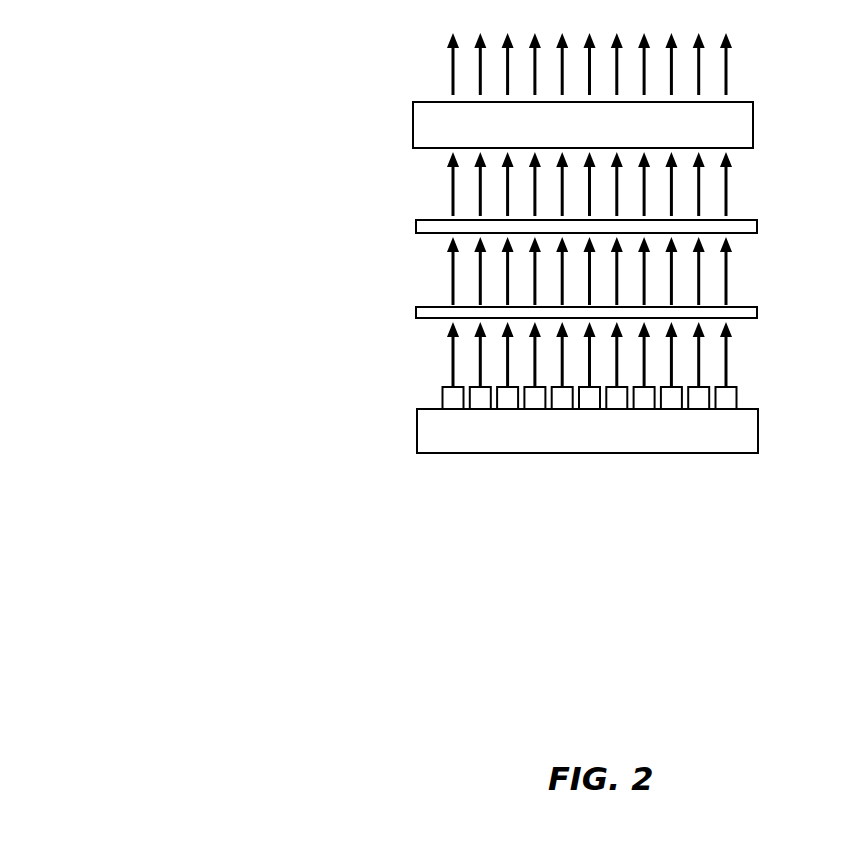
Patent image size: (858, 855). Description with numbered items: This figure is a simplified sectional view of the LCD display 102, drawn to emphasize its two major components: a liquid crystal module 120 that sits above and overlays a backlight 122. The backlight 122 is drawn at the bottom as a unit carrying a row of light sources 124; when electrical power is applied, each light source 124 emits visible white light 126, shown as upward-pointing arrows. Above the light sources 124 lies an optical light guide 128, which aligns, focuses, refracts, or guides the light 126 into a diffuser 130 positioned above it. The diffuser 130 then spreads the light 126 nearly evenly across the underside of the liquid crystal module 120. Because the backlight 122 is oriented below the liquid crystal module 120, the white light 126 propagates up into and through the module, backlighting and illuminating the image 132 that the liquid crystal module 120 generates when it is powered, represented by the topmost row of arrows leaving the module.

The display device 102 is at (154, 553).
The liquid crystal module 120 is at (753, 127).
The backlight 122 is at (417, 433).
The light source 124 is at (767, 387).
The light 126 is at (405, 158).
The optical light guide 128 is at (757, 313).
The diffuser 130 is at (757, 228).
The image 132 is at (405, 40).